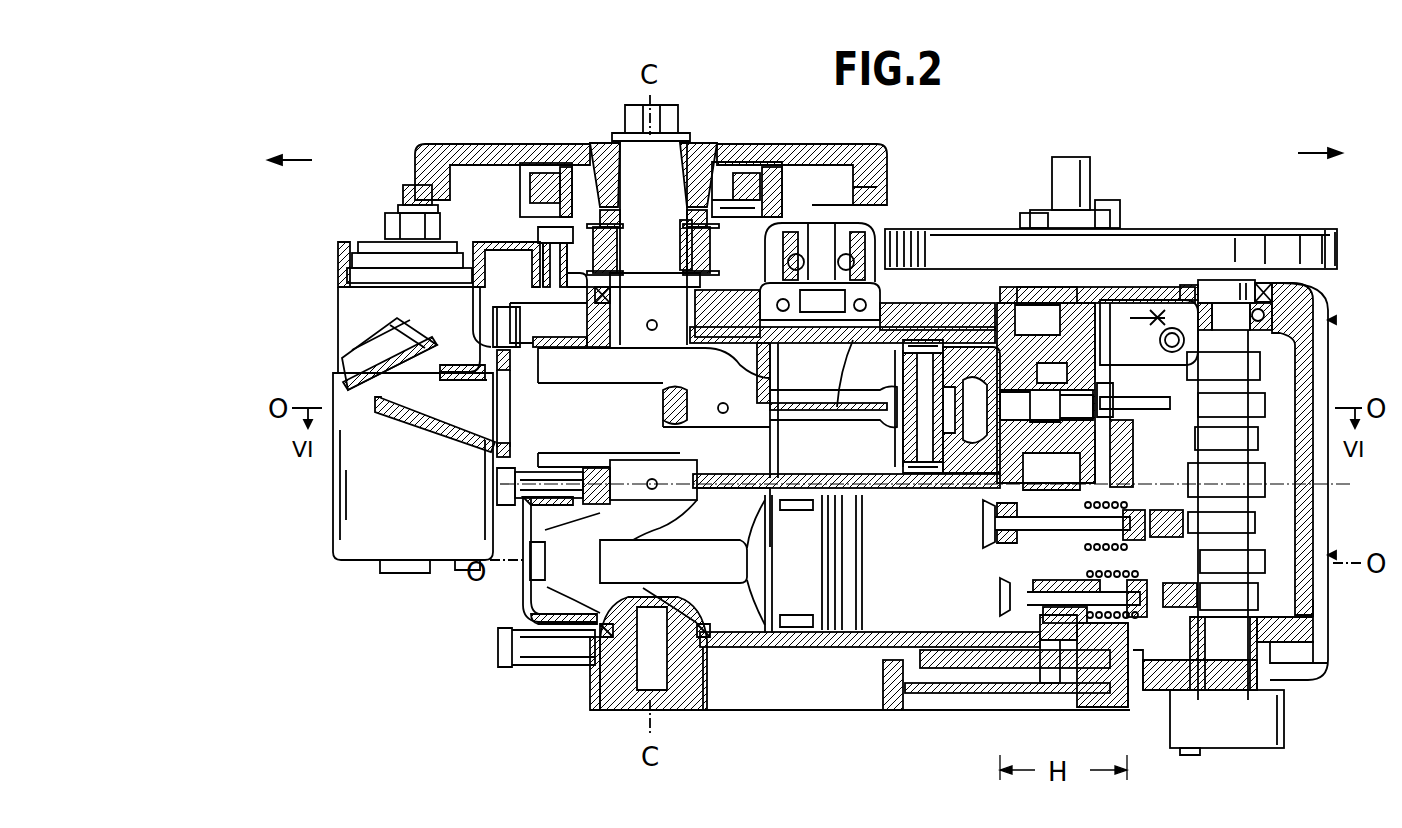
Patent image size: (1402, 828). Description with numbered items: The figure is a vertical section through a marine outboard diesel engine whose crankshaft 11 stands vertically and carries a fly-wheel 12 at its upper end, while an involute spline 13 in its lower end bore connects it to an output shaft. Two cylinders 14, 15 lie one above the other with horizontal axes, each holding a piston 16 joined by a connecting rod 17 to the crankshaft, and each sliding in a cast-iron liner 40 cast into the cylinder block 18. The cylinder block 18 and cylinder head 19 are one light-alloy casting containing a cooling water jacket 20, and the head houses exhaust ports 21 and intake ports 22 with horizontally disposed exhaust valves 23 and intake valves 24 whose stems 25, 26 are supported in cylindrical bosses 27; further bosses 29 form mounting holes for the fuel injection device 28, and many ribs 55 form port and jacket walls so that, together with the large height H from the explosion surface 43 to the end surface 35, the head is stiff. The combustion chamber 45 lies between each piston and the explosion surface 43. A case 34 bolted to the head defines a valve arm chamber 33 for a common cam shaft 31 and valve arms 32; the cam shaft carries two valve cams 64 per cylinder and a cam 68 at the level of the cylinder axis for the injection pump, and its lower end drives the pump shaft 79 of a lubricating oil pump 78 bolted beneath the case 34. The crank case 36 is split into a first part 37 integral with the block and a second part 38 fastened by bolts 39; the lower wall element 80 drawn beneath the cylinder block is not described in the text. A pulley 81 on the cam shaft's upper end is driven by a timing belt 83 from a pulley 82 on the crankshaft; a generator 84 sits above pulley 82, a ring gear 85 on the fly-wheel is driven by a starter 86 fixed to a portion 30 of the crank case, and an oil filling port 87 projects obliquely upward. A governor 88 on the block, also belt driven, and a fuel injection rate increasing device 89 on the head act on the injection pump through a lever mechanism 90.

The crankshaft 11 is at (688, 158).
The fly-wheel 12 is at (856, 160).
The involute spline 13 is at (640, 680).
The cylinder 14 is at (1338, 396).
The cylinder 15 is at (1338, 545).
The piston 16 is at (848, 520).
The connecting rod 17 is at (850, 380).
The cylinder block 18 is at (815, 645).
The cylinder head 19 is at (1085, 670).
The cooling water jacket 20 is at (1059, 481).
The exhaust port 21 is at (1010, 512).
The intake port 22 is at (1035, 590).
The exhaust valve 23 is at (1008, 532).
The intake valve 24 is at (985, 600).
The stem of exhaust valve 25 is at (1110, 500).
The stem of intake valve 26 is at (1000, 620).
The cylindrical boss 27 is at (1075, 640).
The fuel injection device 28 is at (1000, 360).
The cylindrical boss 29 is at (1090, 240).
The portion of crank case 30 is at (500, 322).
The cam shaft 31 is at (1270, 545).
The valve arm 32 is at (1152, 600).
The valve arm chamber 33 is at (1292, 445).
The case 34 is at (1300, 640).
The end surface 35 is at (1140, 690).
The crank case 36 is at (540, 636).
The first part of crank case 37 is at (720, 575).
The second part of crank case 38 is at (567, 632).
The bolt 39 is at (495, 320).
The liner 40 is at (835, 488).
The explosion surface 43 is at (960, 330).
The combustion chamber 45 is at (880, 440).
The rib 55 is at (1010, 578).
The cam 64 is at (1265, 512).
The cam 68 is at (1275, 570).
The lubricating oil pump 78 is at (1292, 737).
The pump shaft 79 is at (1230, 655).
The column 80 is at (905, 688).
The pulley 81 is at (1322, 230).
The pulley 82 is at (735, 225).
The timing belt 83 is at (958, 245).
The generator 84 is at (772, 182).
The ring gear 85 is at (405, 198).
The starter 86 is at (350, 310).
The oil filling port 87 is at (340, 385).
The governor 88 is at (870, 218).
The fuel injection rate increasing device 89 is at (1062, 160).
The lever mechanism 90 is at (1130, 330).